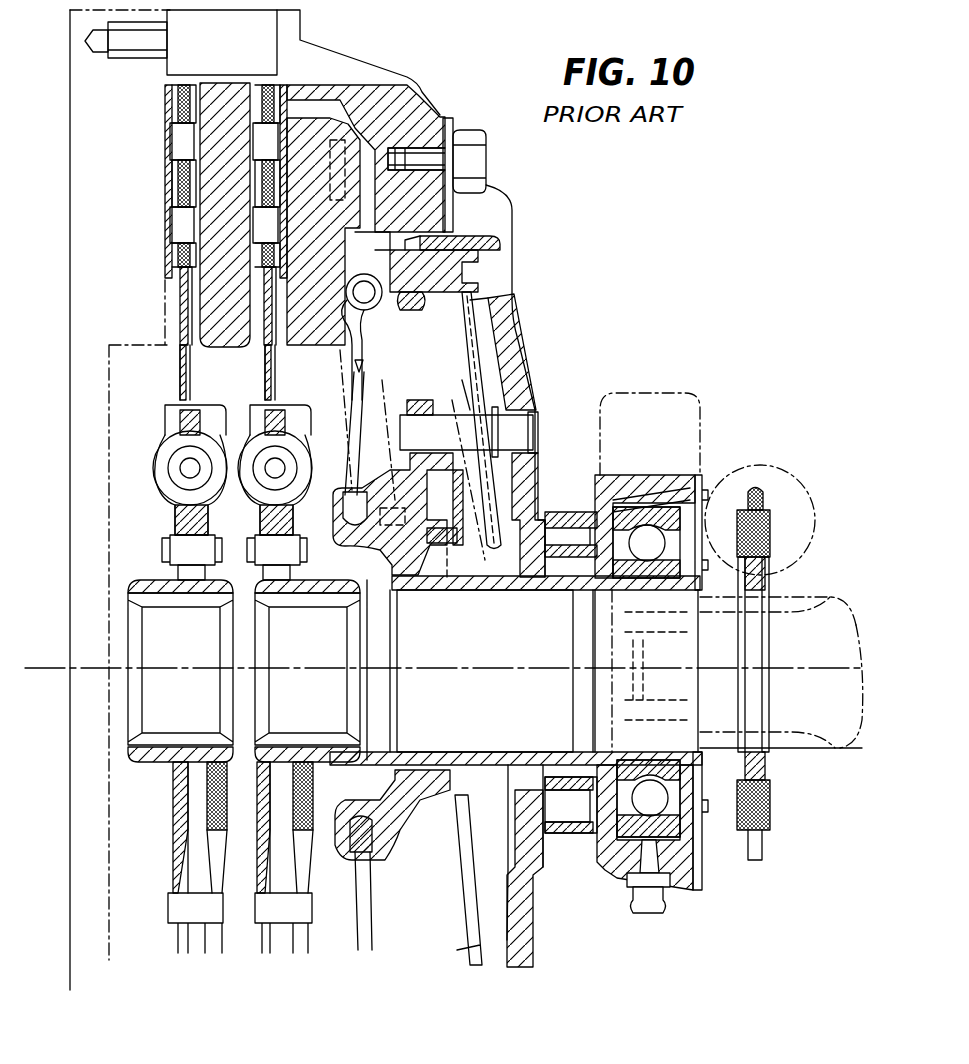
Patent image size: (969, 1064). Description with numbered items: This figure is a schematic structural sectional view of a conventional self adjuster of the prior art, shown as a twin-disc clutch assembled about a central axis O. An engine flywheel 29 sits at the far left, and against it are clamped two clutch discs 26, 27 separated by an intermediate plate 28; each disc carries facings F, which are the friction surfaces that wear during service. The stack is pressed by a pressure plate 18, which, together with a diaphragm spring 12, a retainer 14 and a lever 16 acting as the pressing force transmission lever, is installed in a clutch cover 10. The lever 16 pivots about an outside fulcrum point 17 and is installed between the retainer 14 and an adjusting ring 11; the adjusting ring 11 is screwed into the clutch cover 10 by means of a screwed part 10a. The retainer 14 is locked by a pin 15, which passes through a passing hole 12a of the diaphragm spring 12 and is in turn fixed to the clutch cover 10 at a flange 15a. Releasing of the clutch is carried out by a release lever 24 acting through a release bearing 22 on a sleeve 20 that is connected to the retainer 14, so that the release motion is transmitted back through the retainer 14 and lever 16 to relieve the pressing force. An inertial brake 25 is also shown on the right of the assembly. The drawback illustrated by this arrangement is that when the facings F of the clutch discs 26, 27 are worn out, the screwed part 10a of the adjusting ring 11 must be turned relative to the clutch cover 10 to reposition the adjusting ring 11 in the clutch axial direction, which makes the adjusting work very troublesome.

The clutch cover 10 is at (512, 282).
The screwed part 10a is at (470, 238).
The adjusting ring 11 is at (430, 275).
The diaphragm spring 12 is at (467, 352).
The passing hole 12a is at (463, 400).
The retainer 14 is at (427, 403).
The pin 15 is at (415, 428).
The flange 15a is at (498, 402).
The lever 16 is at (357, 405).
The outside fulcrum point 17 is at (416, 308).
The pressure plate 18 is at (338, 262).
The sleeve 20 is at (472, 590).
The release bearing 22 is at (768, 574).
The release lever 24 is at (605, 455).
The inertial brake 25 is at (780, 477).
The clutch disc 26 is at (155, 422).
The clutch disc 27 is at (242, 420).
The intermediate plate 28 is at (240, 279).
The engine flywheel 29 is at (138, 279).
The facings F is at (182, 188).
The axis O is at (862, 672).